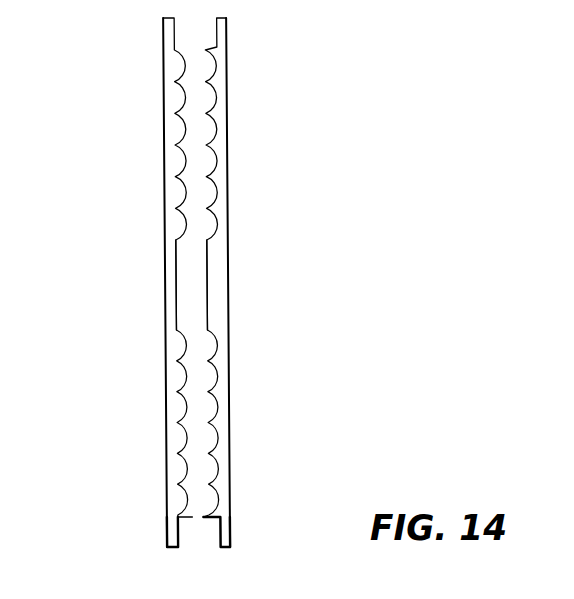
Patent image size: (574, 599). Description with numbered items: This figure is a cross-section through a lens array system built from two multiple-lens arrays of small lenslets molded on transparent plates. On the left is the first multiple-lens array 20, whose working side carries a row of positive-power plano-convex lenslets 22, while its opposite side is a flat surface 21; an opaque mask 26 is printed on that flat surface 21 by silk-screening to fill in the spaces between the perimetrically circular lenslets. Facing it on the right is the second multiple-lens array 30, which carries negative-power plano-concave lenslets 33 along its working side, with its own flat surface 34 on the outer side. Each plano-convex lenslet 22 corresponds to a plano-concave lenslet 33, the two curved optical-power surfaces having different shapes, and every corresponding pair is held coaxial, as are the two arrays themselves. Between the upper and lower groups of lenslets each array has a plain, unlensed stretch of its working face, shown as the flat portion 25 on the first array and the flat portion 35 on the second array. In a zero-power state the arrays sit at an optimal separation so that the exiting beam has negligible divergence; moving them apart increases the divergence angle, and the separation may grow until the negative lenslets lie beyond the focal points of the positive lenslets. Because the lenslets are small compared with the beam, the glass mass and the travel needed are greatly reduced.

The first multiple-lens array 20 is at (112, 46).
The flat surface 21 is at (164, 78).
The plano-convex lenslet 22 is at (192, 517).
The flat interlocking portion of first closure strip 25 is at (165, 293).
The mask 26 is at (166, 521).
The second multiple-lens array 30 is at (282, 46).
The plano-concave lenslet 33 is at (203, 517).
The base web of second closure strip 34 is at (228, 78).
The flat interlocking portion of second closure strip 35 is at (229, 289).